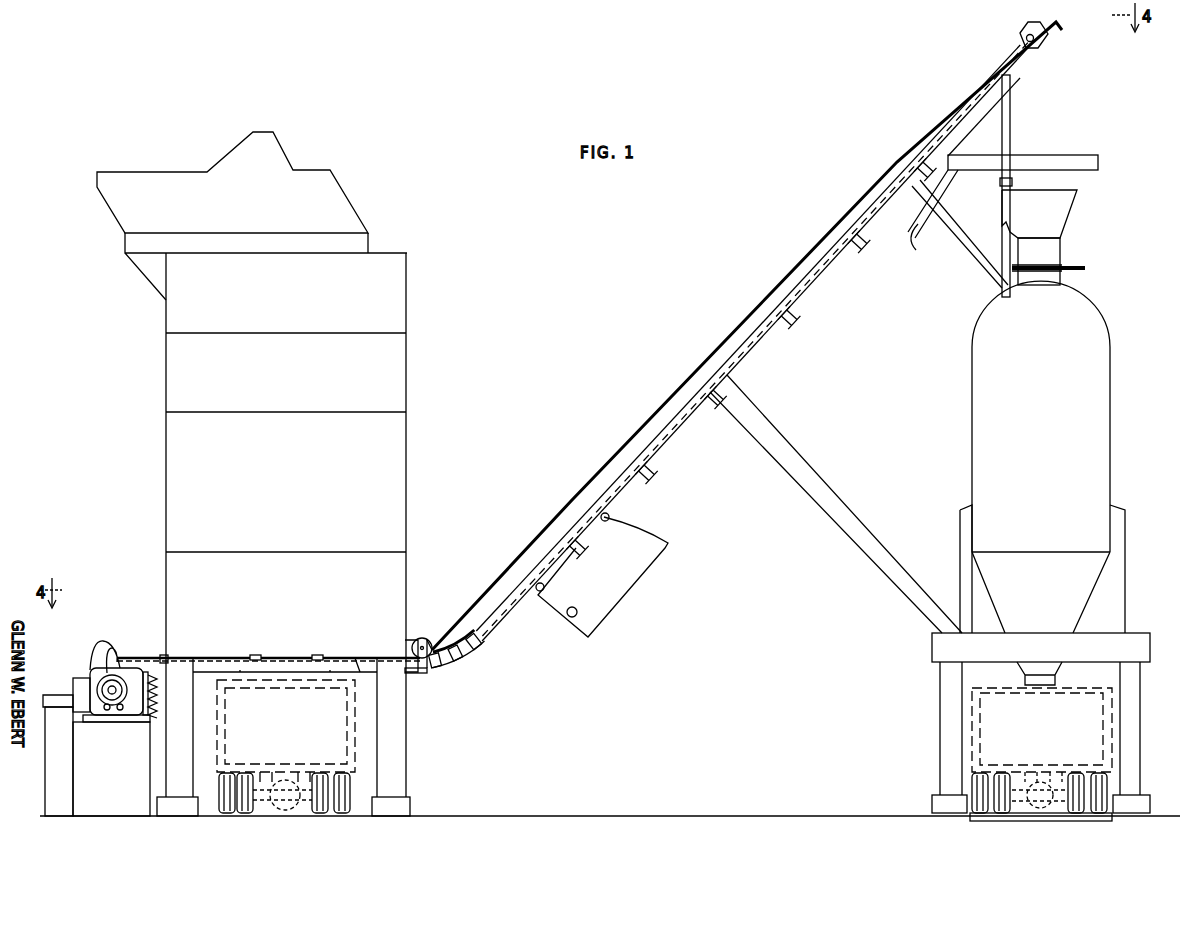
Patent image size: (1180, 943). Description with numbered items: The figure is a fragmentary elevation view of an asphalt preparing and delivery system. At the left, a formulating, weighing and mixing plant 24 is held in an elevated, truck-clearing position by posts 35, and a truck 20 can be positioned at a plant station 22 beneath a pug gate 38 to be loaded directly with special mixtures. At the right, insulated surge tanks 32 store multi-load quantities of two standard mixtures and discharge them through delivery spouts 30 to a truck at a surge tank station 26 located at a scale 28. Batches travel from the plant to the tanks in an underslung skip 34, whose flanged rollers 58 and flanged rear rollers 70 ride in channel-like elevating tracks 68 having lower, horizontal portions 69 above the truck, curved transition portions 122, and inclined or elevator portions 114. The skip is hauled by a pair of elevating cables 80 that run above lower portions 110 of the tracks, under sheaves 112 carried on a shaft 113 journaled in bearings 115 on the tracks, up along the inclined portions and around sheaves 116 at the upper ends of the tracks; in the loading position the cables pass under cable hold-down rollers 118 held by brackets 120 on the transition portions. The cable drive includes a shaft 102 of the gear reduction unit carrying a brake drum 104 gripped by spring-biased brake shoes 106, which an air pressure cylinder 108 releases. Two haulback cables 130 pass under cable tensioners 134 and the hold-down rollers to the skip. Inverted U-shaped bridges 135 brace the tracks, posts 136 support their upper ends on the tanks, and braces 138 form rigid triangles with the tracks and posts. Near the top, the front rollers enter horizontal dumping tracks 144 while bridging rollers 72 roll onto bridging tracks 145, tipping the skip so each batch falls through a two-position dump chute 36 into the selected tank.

The truck 20 is at (366, 749).
The plant station 22 is at (375, 797).
The formulating, weighing and mixing plant 24 is at (158, 530).
The surge tank station 26 is at (957, 792).
The scale 28 is at (975, 815).
The delivery spouts 30 is at (1022, 672).
The insulated surge tanks 32 is at (971, 490).
The underslung skip 34 is at (654, 593).
The posts 35 is at (182, 677).
The two-position dump chute 36 is at (1060, 282).
The pug gate 38 is at (334, 678).
The flanged rollers 58 is at (603, 514).
The elevating tracks 68 is at (766, 371).
The lower, horizontal portions 69 is at (358, 667).
The flanged rear rollers 70 is at (538, 586).
The bridging rollers 72 is at (568, 616).
The elevating cables 80 is at (683, 385).
The shaft 102 is at (100, 643).
The brake drum 104 is at (100, 680).
The brake shoes 106 is at (120, 715).
The air pressure cylinder 108 is at (72, 700).
The lower portions 110 is at (240, 670).
The sheaves 112 is at (422, 640).
The shaft 113 is at (410, 641).
The inclined or elevator portions 114 is at (820, 285).
The bearings 115 is at (418, 673).
The sheaves 116 is at (1024, 40).
The cable hold-down rollers 118 is at (475, 645).
The brackets 120 is at (488, 645).
The curved transition portions 122 is at (450, 668).
The haulback cables 130 is at (165, 658).
The cable tensioners 134 is at (152, 672).
The inverted U-shaped bridges 135 is at (702, 365).
The posts 136 is at (994, 294).
The braces 138 is at (965, 262).
The dumping tracks 144 is at (1062, 157).
The bridging or dumping tracks 145 is at (948, 194).